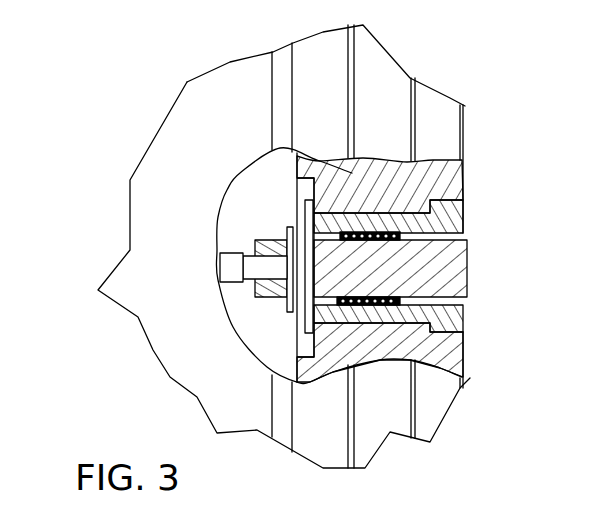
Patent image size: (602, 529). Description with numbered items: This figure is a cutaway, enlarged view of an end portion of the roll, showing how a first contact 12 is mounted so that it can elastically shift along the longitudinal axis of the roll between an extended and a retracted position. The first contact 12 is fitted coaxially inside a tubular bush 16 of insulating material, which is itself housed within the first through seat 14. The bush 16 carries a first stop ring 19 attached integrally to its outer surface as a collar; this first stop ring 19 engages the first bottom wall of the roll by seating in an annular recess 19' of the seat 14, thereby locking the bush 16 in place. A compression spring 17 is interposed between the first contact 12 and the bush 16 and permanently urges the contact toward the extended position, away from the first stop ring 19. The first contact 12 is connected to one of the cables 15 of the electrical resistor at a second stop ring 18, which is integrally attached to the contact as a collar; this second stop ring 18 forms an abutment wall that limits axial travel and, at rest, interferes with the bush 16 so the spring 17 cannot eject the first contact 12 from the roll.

The first contact 12 is at (467, 265).
The first through seat 14 is at (429, 329).
The cables 15 is at (228, 262).
The bush 16 is at (445, 215).
The compression spring 17 is at (397, 219).
The second stop ring 18 is at (288, 227).
The first stop ring 19 is at (226, 191).
The annular recess 19' is at (339, 197).